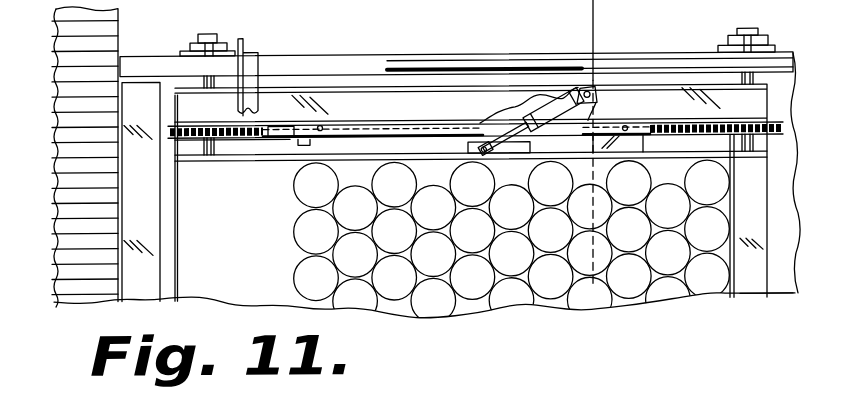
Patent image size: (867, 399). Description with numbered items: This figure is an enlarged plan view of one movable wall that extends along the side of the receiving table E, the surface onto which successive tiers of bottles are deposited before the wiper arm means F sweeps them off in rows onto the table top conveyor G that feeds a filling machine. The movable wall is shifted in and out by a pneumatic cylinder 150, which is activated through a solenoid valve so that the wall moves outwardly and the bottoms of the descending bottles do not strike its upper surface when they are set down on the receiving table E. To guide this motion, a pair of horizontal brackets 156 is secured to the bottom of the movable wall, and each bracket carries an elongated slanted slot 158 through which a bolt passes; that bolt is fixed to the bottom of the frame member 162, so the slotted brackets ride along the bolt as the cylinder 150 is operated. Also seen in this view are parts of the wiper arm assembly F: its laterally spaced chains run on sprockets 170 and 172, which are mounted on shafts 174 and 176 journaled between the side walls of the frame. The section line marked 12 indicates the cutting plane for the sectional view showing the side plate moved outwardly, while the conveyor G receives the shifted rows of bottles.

The table top conveyor G is at (110, 24).
The frame member 162 is at (284, 97).
The shaft 176 is at (203, 78).
The shaft 174 is at (753, 86).
The sprocket 170 is at (767, 126).
The horizontal brackets 156 is at (338, 127).
The sprocket 172 is at (198, 139).
The elongated slanted slot 158 is at (316, 131).
The pneumatic cylinder 150 is at (527, 113).
The receiving table E is at (238, 287).
The wiper arm means F is at (731, 268).
The section line 12- 12 is at (588, 8).